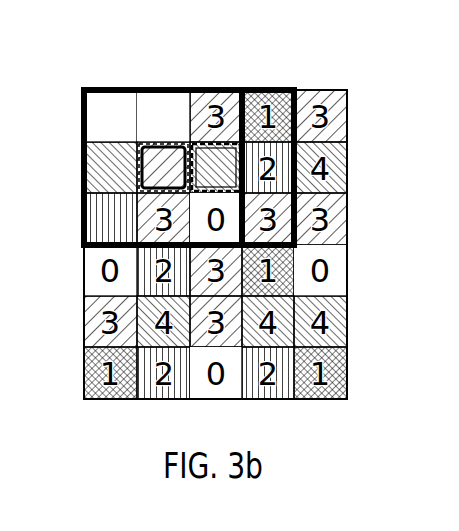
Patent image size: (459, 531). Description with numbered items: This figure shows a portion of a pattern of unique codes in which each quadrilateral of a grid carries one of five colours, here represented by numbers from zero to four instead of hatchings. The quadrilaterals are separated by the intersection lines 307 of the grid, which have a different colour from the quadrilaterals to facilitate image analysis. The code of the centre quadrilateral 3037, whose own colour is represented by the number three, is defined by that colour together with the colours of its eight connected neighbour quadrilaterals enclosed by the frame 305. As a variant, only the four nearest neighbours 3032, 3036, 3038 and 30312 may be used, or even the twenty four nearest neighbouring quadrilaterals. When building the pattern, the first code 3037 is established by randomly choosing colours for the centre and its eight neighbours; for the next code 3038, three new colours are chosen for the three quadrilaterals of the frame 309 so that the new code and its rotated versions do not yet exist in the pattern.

The frame of neighbour quadrilaterals 305 is at (101, 88).
The nearest neighbour quadrilateral 3032 is at (146, 88).
The centre quadrilateral 3037 is at (182, 141).
The next code quadrilateral 3038 is at (233, 143).
The nearest neighbour quadrilateral 3036 is at (81, 161).
The nearest neighbour quadrilateral 30312 is at (82, 214).
The intersection lines 307 is at (93, 136).
The frame 309 is at (268, 88).